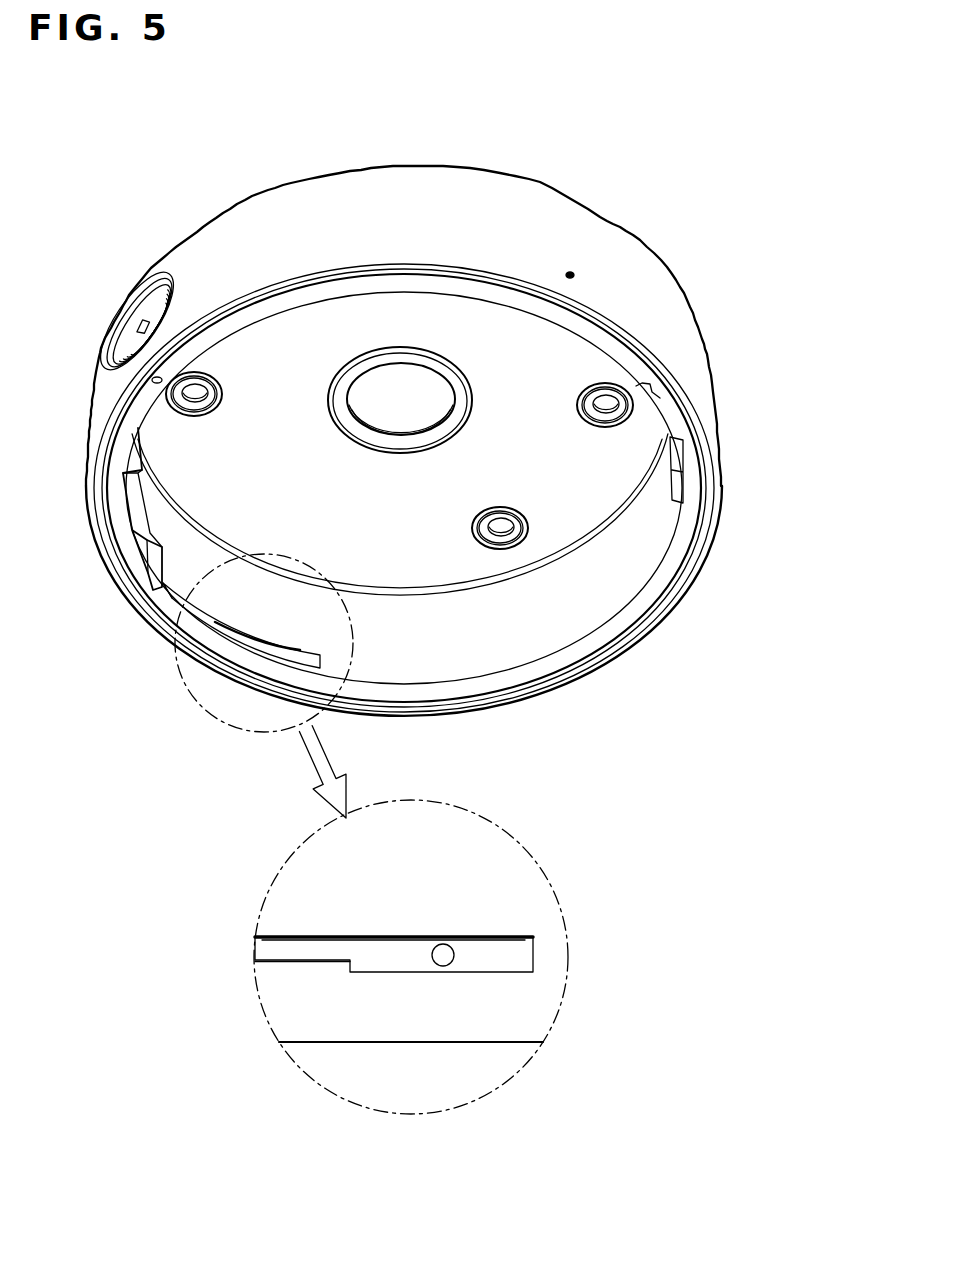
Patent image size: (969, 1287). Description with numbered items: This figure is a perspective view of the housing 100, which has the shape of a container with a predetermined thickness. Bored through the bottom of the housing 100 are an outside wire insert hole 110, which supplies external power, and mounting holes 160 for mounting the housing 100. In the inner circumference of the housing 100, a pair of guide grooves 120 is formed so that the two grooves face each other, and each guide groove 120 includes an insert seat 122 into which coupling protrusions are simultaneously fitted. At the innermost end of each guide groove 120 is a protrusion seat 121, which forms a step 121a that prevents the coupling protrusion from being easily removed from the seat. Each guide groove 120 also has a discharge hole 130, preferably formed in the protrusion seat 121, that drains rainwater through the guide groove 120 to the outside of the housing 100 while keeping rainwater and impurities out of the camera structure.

The housing 100 is at (632, 218).
The outside wire insert hole 110 is at (400, 386).
The guide groove 120 is at (177, 585).
The protrusion seat 121 is at (510, 967).
The step 121a is at (372, 972).
The insert seat 122 is at (142, 542).
The discharge hole 130 is at (445, 942).
The mounting hole 160 is at (628, 418).